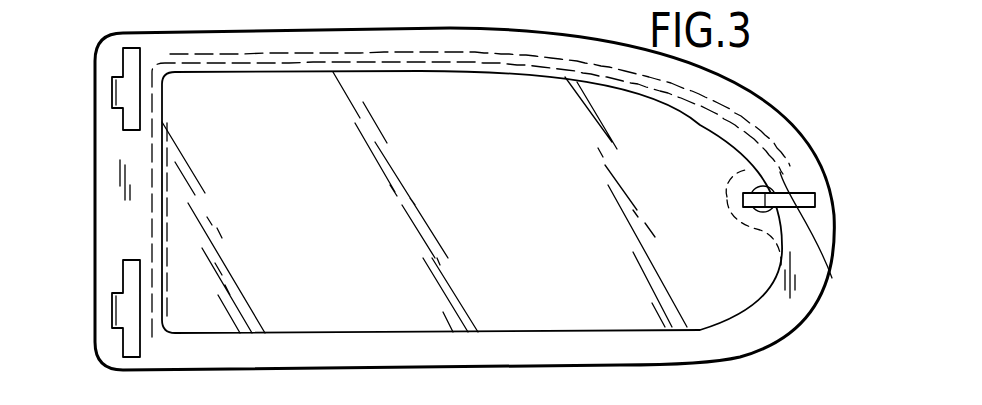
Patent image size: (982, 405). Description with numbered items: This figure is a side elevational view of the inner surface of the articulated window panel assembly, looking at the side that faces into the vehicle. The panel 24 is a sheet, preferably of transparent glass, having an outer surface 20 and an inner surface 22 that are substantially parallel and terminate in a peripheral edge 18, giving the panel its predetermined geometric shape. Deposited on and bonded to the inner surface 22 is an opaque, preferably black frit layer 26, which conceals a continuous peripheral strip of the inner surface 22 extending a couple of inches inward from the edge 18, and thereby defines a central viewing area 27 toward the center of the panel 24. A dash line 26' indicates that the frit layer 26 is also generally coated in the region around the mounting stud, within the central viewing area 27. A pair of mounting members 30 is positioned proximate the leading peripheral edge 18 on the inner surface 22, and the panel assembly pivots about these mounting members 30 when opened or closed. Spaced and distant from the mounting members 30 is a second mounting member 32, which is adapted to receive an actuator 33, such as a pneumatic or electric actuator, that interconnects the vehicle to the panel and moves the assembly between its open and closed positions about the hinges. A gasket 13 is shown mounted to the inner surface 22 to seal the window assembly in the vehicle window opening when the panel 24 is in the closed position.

The gasket 13 is at (214, 53).
The peripheral edge 18 is at (95, 173).
The outer surface 20 is at (549, 227).
The inner surface 22 is at (545, 256).
The panel 24 is at (770, 94).
The frit layer 26 is at (472, 234).
The dash line 26' is at (716, 202).
The central viewing area 27 is at (590, 307).
The mounting members 30 is at (112, 80).
The second mounting member 32 is at (760, 190).
The actuator 33 is at (818, 242).